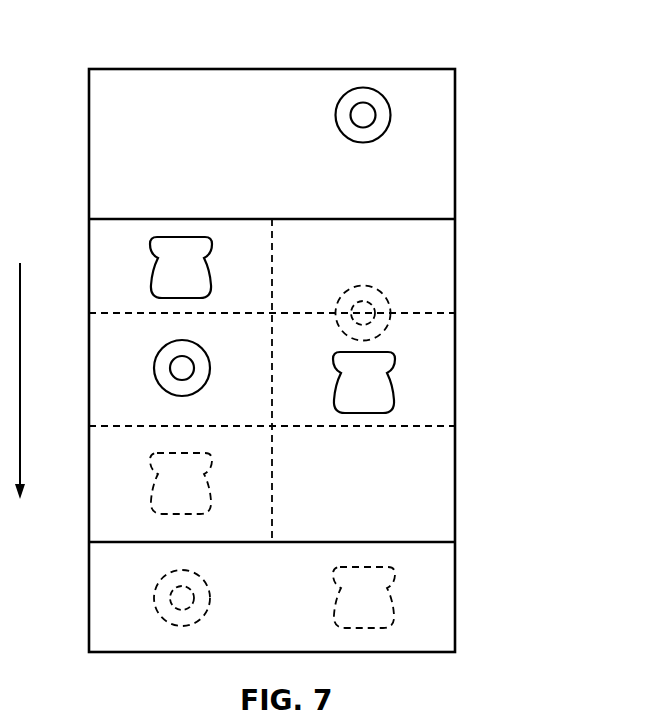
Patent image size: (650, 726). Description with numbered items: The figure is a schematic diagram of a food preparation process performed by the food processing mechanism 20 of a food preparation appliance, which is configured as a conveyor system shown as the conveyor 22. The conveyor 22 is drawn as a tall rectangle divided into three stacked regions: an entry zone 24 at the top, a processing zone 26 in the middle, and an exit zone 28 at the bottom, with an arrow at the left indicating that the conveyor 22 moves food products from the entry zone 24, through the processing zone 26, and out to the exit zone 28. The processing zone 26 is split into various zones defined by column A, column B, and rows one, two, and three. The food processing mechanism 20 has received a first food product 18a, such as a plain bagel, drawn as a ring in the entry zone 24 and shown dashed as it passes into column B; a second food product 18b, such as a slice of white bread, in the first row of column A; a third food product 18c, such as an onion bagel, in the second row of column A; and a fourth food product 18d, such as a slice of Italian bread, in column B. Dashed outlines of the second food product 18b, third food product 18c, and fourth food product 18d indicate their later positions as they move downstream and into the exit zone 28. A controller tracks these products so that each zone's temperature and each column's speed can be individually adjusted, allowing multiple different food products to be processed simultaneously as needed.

The food processing mechanism 20 is at (180, 46).
The conveyor 22 is at (101, 75).
The entry zone 24 is at (475, 99).
The processing zone 26 is at (475, 341).
The exit zone 28 is at (475, 575).
The first food product 18a is at (365, 99).
The second food product 18b is at (172, 253).
The third food product 18c is at (175, 353).
The fourth food product 18d is at (375, 402).